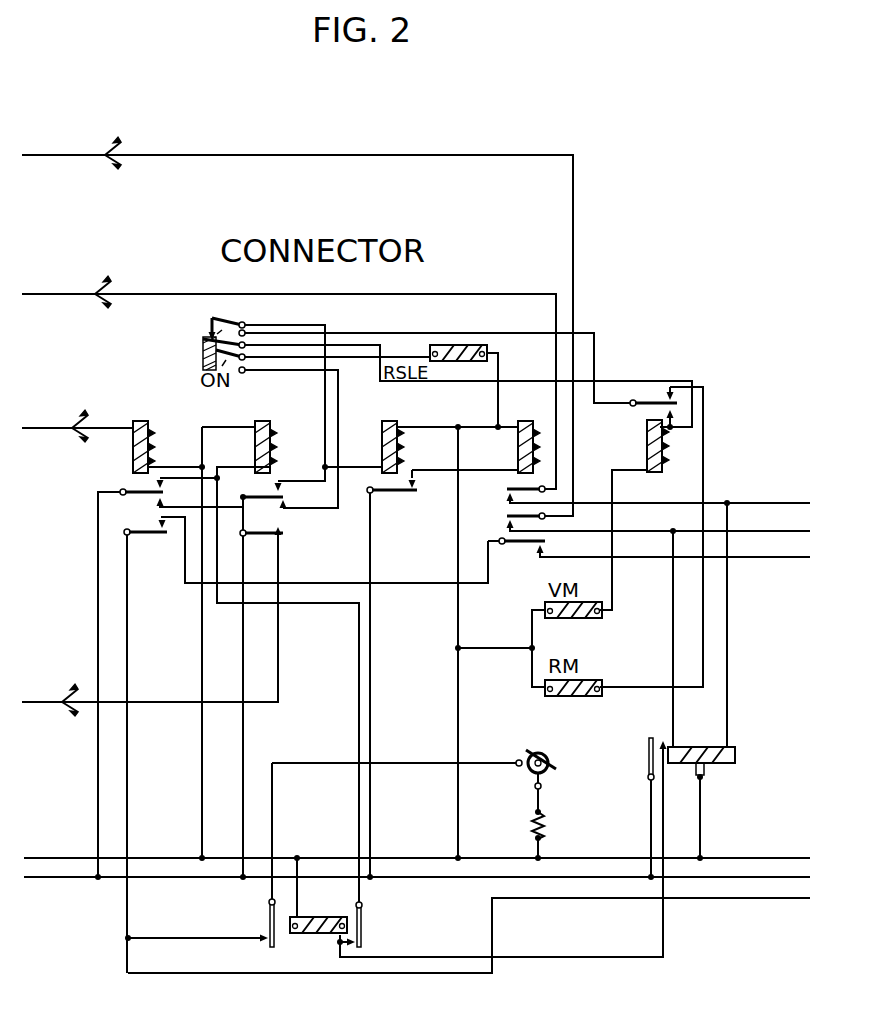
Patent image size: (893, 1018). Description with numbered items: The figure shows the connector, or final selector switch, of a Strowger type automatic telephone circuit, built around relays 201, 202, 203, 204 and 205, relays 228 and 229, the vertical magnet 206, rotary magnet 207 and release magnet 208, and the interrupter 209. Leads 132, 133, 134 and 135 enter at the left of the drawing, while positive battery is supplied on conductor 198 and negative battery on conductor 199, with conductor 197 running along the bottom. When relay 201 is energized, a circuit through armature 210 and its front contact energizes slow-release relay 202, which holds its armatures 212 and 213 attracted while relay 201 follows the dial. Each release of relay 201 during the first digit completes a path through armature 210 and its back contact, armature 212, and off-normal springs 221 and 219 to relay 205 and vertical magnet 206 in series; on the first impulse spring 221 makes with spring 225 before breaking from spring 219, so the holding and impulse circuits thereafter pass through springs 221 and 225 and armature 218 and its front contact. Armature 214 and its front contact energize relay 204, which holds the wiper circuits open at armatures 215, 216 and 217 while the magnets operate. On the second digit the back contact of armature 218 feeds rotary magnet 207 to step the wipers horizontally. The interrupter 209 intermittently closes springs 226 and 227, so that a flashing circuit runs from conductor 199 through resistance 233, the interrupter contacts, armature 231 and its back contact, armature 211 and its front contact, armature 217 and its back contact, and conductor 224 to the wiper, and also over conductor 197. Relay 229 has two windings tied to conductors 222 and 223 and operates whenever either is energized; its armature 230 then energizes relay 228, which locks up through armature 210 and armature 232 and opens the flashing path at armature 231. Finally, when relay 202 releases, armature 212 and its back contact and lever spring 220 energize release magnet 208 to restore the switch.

The conductor 132 is at (297, 323).
The conductor 133 is at (289, 379).
The conductor 134 is at (77, 422).
The conductor 135 is at (150, 623).
The conductor 197 is at (772, 891).
The conductor 198 is at (417, 867).
The conductor 199 is at (417, 845).
The relay 201 is at (145, 447).
The relay 202 is at (280, 663).
The relay 203 is at (421, 447).
The relay 204 is at (507, 447).
The relay 205 is at (646, 515).
The vertical magnet 206 is at (535, 644).
The rotary magnet 207 is at (624, 553).
The release magnet 208 is at (488, 353).
The interrupter 209 is at (553, 761).
The armature 210 is at (169, 677).
The armature 211 is at (306, 745).
The armature 212 is at (263, 681).
The armature 213 is at (261, 542).
The armature 214 is at (442, 675).
The armature 215 is at (508, 488).
The armature 216 is at (506, 514).
The armature 217 is at (649, 553).
The armature 218 is at (652, 403).
The off-normal spring 219 is at (208, 331).
The lever spring 220 is at (203, 348).
The off-normal spring 221 is at (226, 328).
The conductor 222 is at (767, 494).
The conductor 223 is at (740, 522).
The conductor 224 is at (683, 548).
The off-normal spring 225 is at (270, 334).
The interrupter spring 226 is at (527, 756).
The interrupter spring 227 is at (545, 778).
The relay 228 is at (478, 849).
The relay 229 is at (701, 682).
The armature 230 is at (648, 780).
The armature 231 is at (263, 930).
The armature 232 is at (362, 928).
The resistance 233 is at (530, 826).